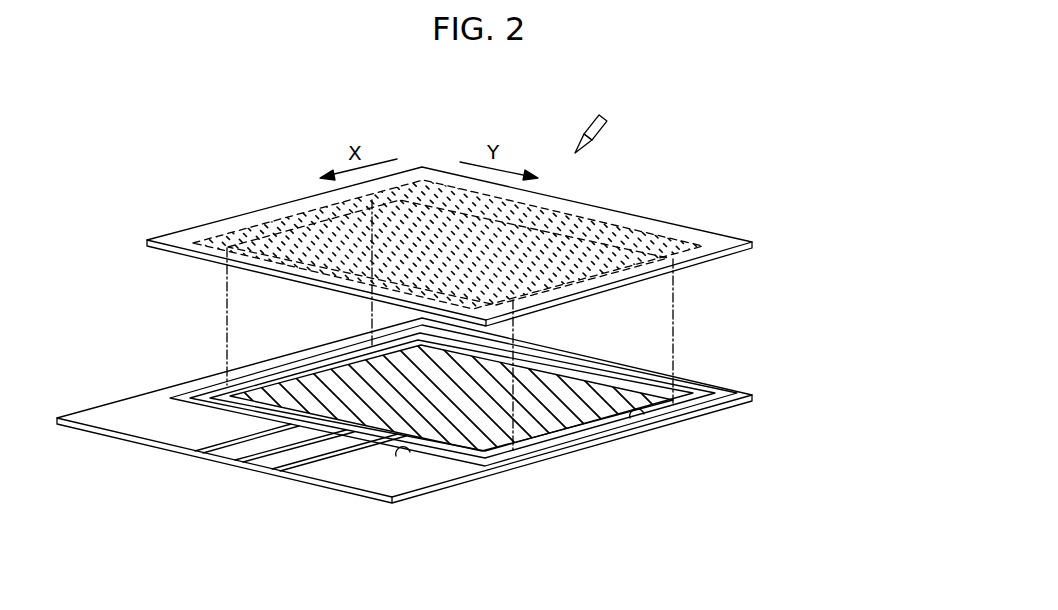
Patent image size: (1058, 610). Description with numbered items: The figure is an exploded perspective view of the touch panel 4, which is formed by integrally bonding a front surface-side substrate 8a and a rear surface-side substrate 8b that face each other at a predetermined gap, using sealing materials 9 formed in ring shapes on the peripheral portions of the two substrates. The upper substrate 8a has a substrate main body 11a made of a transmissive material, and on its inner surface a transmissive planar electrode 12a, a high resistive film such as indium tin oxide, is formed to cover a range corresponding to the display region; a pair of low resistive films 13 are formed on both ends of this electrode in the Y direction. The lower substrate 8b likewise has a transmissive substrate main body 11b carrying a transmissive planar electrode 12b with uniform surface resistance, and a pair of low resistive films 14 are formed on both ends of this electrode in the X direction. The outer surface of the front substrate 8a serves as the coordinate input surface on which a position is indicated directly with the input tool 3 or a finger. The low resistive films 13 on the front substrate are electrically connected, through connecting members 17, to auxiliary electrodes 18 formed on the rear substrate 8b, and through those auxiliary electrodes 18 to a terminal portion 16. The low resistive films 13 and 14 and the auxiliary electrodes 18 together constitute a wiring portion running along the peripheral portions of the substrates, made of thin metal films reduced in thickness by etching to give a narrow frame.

The input tool 3 is at (605, 118).
The touch panel 4 is at (843, 288).
The front surface-side substrate 8a is at (720, 265).
The rear surface-side substrate 8b is at (758, 404).
The sealing material 9 is at (288, 360).
The substrate main body 11a is at (693, 228).
The substrate main body 11b is at (687, 378).
The planar electrode 12a is at (433, 203).
The planar electrode 12b is at (553, 388).
The low resistive film 13 is at (263, 228).
The low resistive film 14 is at (610, 380).
The terminal portion 16 is at (245, 478).
The connecting member 17 is at (227, 386).
The auxiliary electrode 18 is at (263, 373).